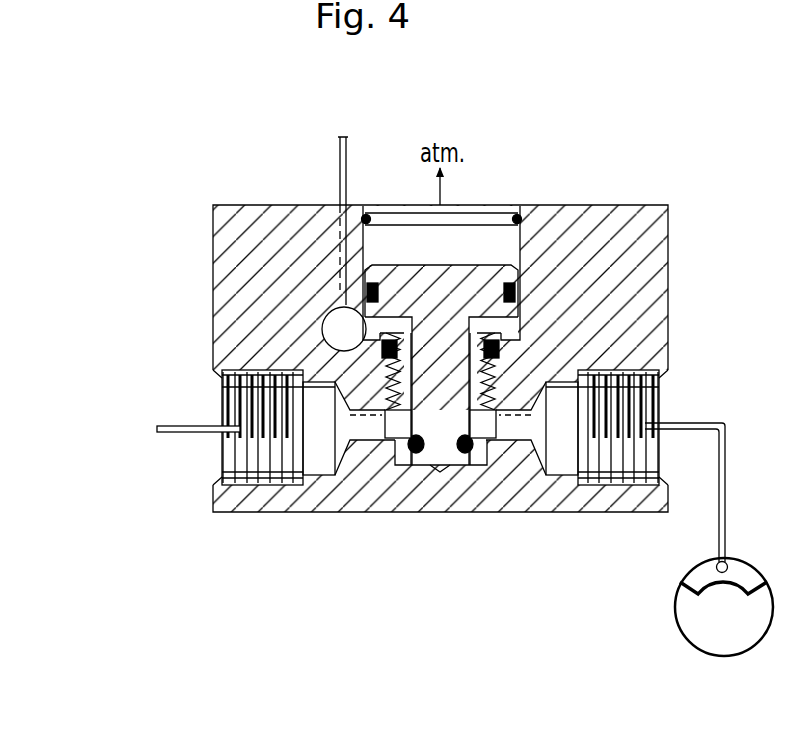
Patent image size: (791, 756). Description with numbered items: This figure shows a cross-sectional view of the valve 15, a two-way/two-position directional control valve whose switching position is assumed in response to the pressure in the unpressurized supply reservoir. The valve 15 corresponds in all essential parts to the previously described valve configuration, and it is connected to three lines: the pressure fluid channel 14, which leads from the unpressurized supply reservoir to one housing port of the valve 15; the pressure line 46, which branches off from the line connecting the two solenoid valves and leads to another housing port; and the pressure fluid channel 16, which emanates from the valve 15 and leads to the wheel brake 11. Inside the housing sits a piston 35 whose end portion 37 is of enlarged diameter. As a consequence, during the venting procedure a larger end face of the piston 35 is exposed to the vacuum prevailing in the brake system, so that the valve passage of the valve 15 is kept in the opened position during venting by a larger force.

The valve 15 is at (257, 186).
The pressure fluid channel 14 is at (339, 153).
The piston 35 is at (432, 362).
The end portion 37 is at (468, 283).
The pressure line 46 is at (182, 425).
The pressure fluid channel 16 is at (693, 422).
The wheel brake 11 is at (697, 612).